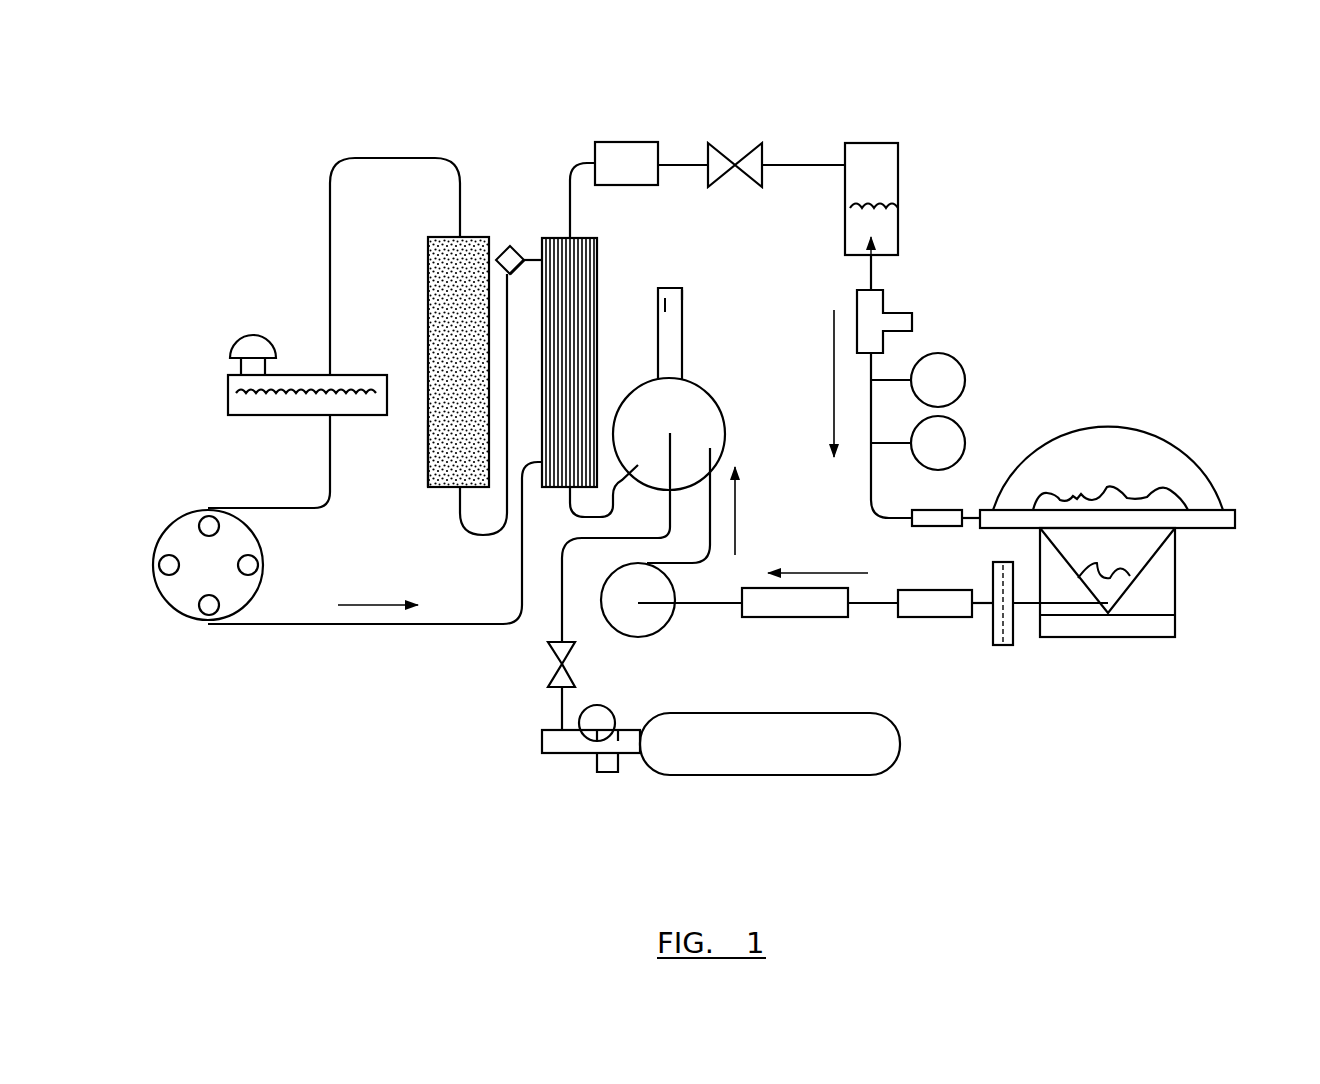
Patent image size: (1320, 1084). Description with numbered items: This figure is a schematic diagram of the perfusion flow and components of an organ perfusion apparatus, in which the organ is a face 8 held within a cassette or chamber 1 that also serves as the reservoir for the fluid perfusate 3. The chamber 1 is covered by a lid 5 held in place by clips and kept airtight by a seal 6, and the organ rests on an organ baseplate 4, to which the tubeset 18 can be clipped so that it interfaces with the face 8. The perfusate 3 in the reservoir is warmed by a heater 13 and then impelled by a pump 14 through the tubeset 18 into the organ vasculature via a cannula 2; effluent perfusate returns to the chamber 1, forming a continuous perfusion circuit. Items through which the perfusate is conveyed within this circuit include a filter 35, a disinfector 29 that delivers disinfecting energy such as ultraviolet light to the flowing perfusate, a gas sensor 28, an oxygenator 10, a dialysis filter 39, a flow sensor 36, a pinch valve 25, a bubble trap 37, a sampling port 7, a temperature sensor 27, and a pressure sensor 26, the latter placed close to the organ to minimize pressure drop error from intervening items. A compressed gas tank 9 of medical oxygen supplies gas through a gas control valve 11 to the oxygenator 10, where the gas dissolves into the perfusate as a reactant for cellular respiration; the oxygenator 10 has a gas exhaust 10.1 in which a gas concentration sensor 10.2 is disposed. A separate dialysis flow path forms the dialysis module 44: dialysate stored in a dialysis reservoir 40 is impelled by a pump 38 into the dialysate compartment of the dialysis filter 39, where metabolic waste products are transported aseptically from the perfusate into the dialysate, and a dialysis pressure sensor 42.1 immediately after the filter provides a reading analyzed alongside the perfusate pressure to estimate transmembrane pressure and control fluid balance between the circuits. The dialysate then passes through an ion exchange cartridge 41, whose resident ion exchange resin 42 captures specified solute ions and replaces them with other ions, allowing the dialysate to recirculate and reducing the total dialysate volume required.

The chamber 1 is at (1153, 558).
The cannula 2 is at (960, 508).
The perfusate 3 is at (1108, 590).
The organ baseplate 4 is at (1215, 497).
The lid 5 is at (1191, 452).
The seal 6 is at (1219, 532).
The sampling port 7 is at (905, 308).
The face 8 is at (1113, 485).
The compressed gas tank 9 is at (728, 750).
The oxygenator 10 is at (672, 408).
The gas exhaust 10.1 is at (682, 288).
The gas concentration sensor 10.2 is at (658, 307).
The gas control valve 11 is at (549, 684).
The heater 13 is at (1108, 640).
The pump 14 is at (656, 622).
The tubeset 18 is at (804, 162).
The pinch valve 25 is at (728, 143).
The pressure sensor 26 is at (963, 420).
The temperature sensor 27 is at (955, 352).
The gas sensor 28 is at (808, 620).
The disinfector 29 is at (945, 620).
The filter 35 is at (1008, 645).
The flow sensor 36 is at (622, 142).
The bubble trap 37 is at (876, 143).
The pump 38 is at (182, 520).
The dialysis filter 39 is at (548, 235).
The dialysis reservoir 40 is at (240, 408).
The ion exchange cartridge 41 is at (428, 440).
The ion exchange resin 42 is at (452, 245).
The dialysis pressure sensor 42.1 is at (510, 246).
The dialysis module 44 is at (297, 698).